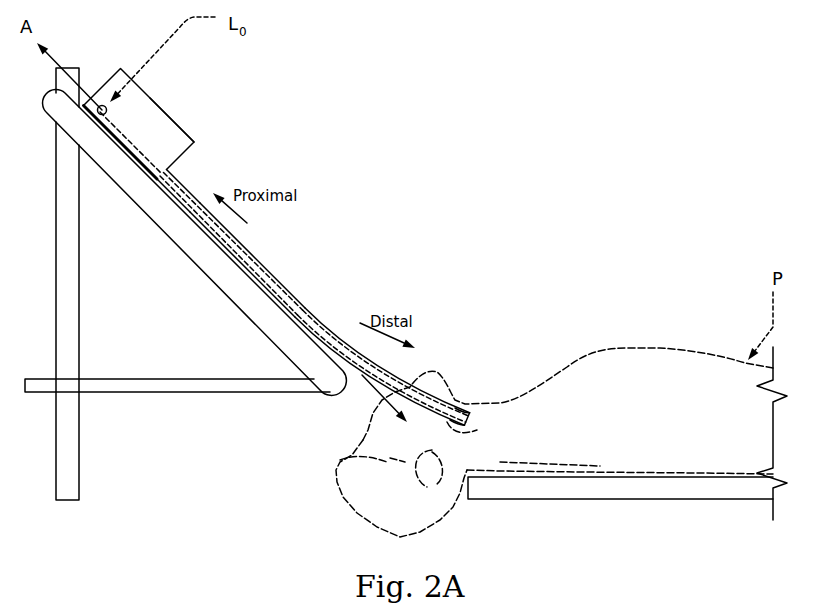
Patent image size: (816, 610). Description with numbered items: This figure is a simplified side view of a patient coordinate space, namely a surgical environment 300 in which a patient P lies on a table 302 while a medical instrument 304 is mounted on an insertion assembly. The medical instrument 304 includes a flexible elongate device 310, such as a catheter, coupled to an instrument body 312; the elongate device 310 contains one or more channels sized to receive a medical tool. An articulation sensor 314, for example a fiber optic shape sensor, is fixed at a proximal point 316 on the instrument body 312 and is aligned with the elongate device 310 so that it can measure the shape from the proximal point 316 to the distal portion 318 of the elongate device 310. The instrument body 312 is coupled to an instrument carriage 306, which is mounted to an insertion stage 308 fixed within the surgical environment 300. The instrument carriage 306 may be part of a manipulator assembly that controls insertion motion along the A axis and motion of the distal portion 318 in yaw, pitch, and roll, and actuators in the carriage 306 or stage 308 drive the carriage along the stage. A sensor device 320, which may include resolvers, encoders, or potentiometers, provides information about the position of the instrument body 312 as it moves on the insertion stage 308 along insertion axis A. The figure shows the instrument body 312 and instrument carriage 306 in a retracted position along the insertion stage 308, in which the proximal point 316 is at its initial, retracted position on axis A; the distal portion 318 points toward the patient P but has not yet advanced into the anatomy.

The surgical environment 300 is at (607, 135).
The operating table 302 is at (620, 500).
The medical instrument 304 is at (148, 100).
The instrument carriage 306 is at (165, 165).
The insertion stage 308 is at (187, 252).
The flexible elongate device 310 is at (313, 316).
The instrument body 312 is at (178, 130).
The articulation sensor 314 is at (258, 260).
The proximal point 316 is at (100, 92).
The distal portion 318 is at (472, 428).
The sensor device 320 is at (117, 143).